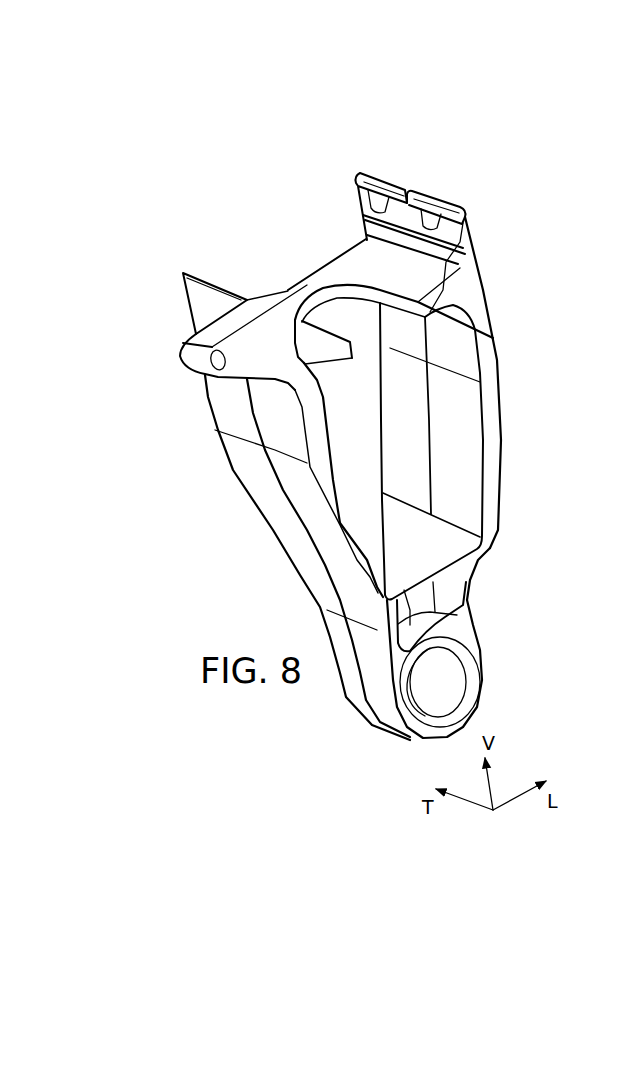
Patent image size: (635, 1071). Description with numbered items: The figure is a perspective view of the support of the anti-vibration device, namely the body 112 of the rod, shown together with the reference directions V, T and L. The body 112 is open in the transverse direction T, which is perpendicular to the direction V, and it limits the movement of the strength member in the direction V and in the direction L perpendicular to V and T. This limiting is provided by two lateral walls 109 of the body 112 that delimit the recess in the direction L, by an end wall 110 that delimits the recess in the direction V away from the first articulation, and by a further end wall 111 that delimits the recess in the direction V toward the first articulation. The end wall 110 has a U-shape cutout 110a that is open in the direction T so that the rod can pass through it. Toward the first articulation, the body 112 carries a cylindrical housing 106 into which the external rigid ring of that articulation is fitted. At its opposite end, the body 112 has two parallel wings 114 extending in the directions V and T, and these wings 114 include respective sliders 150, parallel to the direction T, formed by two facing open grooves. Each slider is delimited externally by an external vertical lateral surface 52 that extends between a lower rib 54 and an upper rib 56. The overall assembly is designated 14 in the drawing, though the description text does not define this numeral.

The bracket 14 is at (464, 643).
The external vertical lateral surface 52 is at (371, 192).
The lower rib 54 is at (463, 240).
The upper rib 56 is at (425, 210).
The cylindrical housing 106 is at (457, 680).
The lateral walls 109 is at (340, 503).
The end wall 110 is at (333, 273).
The U-shape cutout 110a is at (323, 287).
The end wall 111 is at (437, 540).
The body 112 is at (508, 368).
The wings 114 is at (203, 302).
The sliders 150 is at (351, 197).